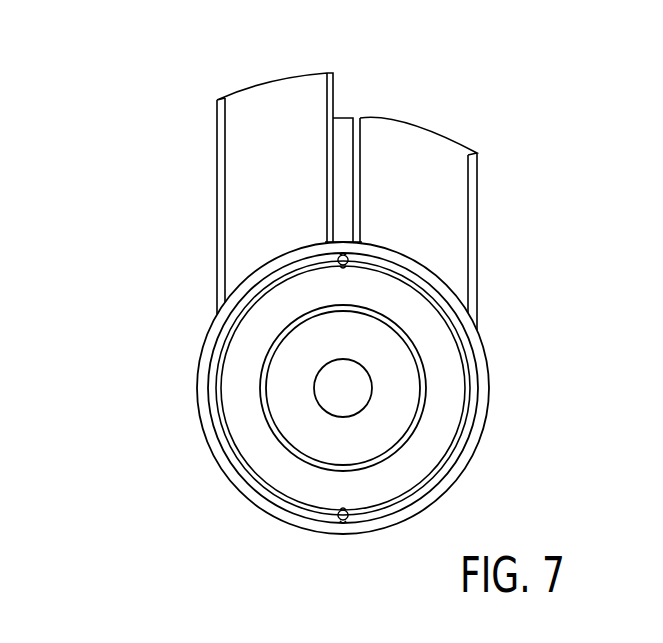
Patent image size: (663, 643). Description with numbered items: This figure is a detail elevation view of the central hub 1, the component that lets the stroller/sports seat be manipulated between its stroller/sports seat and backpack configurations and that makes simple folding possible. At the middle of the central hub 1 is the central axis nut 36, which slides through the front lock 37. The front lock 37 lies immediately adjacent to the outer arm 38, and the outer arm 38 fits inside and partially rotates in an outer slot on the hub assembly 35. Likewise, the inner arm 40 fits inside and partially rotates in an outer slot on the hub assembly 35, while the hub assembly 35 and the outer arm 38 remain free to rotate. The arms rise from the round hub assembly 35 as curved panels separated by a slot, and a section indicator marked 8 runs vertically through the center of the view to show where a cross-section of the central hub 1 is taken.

The central hub 1 is at (103, 92).
The section line 8- 8 is at (343, 50).
The hub assembly 35 is at (412, 150).
The central axis nut 36 is at (288, 392).
The front lock 37 is at (255, 446).
The outer arm 38 is at (242, 188).
The inner arm 40 is at (342, 132).